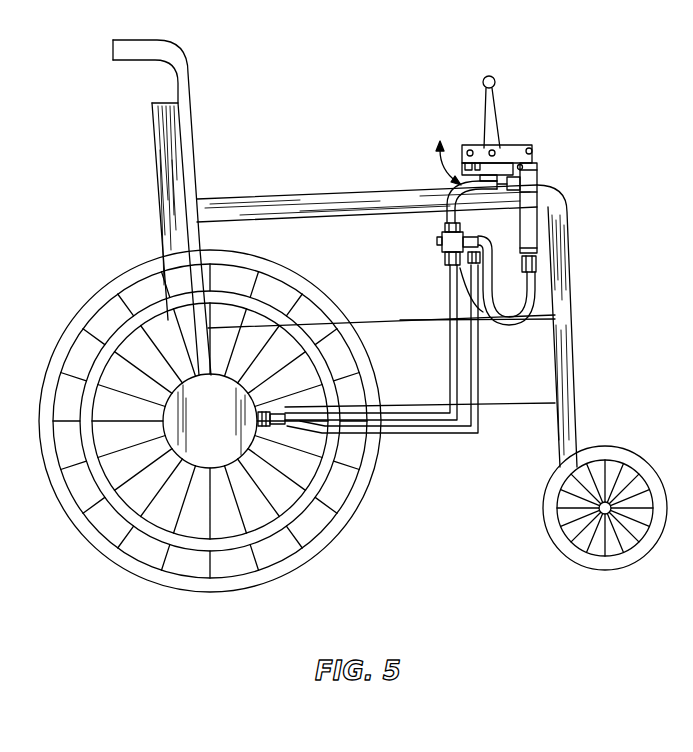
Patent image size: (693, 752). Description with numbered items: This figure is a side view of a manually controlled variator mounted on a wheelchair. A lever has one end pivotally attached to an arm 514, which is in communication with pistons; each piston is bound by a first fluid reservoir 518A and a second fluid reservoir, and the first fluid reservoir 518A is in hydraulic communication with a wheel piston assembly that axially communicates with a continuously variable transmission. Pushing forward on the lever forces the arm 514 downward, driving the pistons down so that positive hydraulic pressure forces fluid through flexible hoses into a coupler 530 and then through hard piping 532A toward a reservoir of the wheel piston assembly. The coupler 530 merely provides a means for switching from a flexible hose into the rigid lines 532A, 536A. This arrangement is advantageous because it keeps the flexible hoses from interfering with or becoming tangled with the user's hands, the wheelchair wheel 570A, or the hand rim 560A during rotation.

The arm 514 is at (533, 157).
The first fluid reservoir 518A is at (530, 227).
The coupler 530 is at (432, 249).
The hard piping 532A is at (397, 420).
The rigid line 536A is at (473, 435).
The hand rim 560A is at (297, 508).
The wheelchair wheel 570A is at (188, 583).